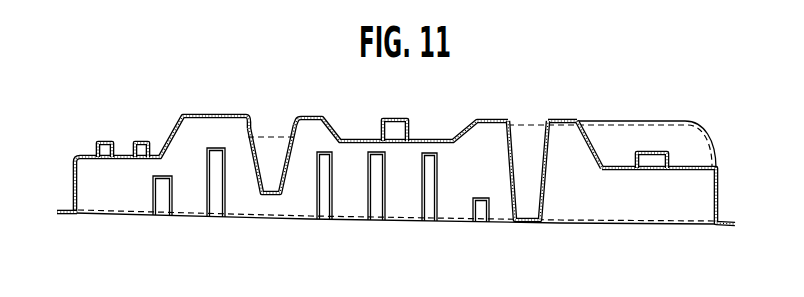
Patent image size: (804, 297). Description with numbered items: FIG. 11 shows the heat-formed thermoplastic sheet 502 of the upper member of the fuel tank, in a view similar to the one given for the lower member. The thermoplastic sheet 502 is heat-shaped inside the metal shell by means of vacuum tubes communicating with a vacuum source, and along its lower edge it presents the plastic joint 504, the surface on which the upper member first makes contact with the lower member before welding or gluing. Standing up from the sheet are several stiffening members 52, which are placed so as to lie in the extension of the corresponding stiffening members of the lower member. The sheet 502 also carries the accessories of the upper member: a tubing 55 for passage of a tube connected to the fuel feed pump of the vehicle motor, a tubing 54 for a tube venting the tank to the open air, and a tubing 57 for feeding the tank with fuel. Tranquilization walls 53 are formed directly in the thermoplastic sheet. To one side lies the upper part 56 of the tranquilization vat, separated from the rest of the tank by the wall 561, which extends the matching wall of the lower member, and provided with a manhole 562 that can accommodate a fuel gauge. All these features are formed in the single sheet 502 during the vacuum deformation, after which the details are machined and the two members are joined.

The thermoplastic sheet 502 is at (718, 189).
The plastic joint 504 is at (66, 213).
The tubing 55 is at (97, 151).
The tubing 54 is at (134, 151).
The tranquilization walls 53 is at (259, 160).
The tubing 57 is at (407, 131).
The wall 561 is at (530, 152).
The upper part of the tranquilization vat 56 is at (568, 152).
The manhole 562 is at (670, 156).
The stiffening members 52 is at (218, 204).